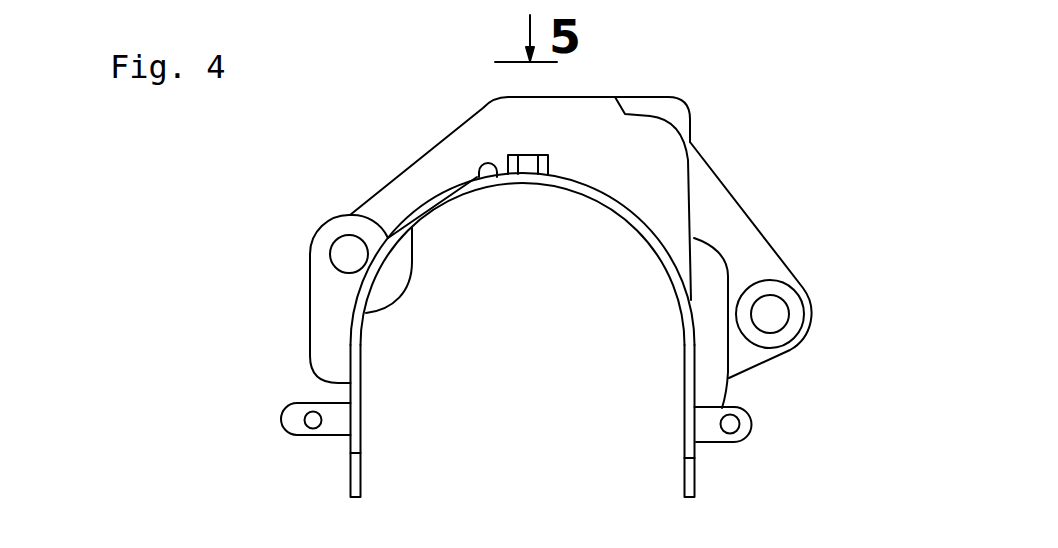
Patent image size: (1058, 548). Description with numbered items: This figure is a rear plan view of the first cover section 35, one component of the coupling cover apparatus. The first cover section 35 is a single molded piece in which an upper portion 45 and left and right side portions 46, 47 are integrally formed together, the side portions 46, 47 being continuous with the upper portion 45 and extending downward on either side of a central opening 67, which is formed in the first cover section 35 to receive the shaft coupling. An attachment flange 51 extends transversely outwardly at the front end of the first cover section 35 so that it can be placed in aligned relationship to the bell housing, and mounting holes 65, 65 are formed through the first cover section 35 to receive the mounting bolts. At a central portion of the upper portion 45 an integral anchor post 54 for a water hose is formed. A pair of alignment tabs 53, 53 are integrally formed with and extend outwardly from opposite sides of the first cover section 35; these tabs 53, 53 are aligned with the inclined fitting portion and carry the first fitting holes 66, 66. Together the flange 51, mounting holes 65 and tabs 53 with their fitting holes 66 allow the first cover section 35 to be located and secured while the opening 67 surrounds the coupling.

The first cover section 35 is at (358, 131).
The upper portion 45 is at (486, 180).
The left side portion 46 is at (352, 335).
The right side portion 47 is at (695, 362).
The attachment flange 51 is at (436, 145).
The alignment tabs 53 is at (296, 403).
The anchor post 54 is at (533, 153).
The mounting holes 65 is at (337, 254).
The first fitting holes 66 is at (306, 434).
The central opening 67 is at (613, 212).